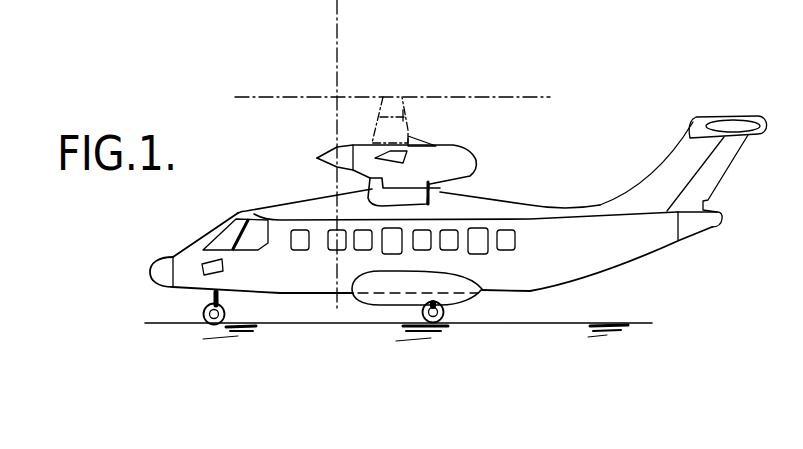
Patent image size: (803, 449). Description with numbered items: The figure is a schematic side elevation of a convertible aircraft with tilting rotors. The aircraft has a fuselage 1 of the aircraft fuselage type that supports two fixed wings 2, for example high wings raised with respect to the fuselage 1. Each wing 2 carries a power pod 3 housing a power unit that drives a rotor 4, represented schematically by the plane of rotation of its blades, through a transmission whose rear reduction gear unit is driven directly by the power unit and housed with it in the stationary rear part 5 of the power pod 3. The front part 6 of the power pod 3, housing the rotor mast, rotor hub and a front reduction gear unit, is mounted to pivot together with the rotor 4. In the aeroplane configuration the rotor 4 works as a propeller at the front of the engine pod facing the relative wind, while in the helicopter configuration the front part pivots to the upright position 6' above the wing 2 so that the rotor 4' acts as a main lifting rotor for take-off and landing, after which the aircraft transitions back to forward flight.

The fuselage 1 is at (310, 298).
The fixed wing 2 is at (440, 192).
The power pod 3 is at (416, 125).
The rotor 4 is at (308, 155).
The rotor in helicopter configuration 4' is at (395, 60).
The stationary rear part of the power pod 5 is at (440, 162).
The front part of the power pod 6 is at (366, 156).
The front part of the power pod in upright position 6' is at (406, 83).